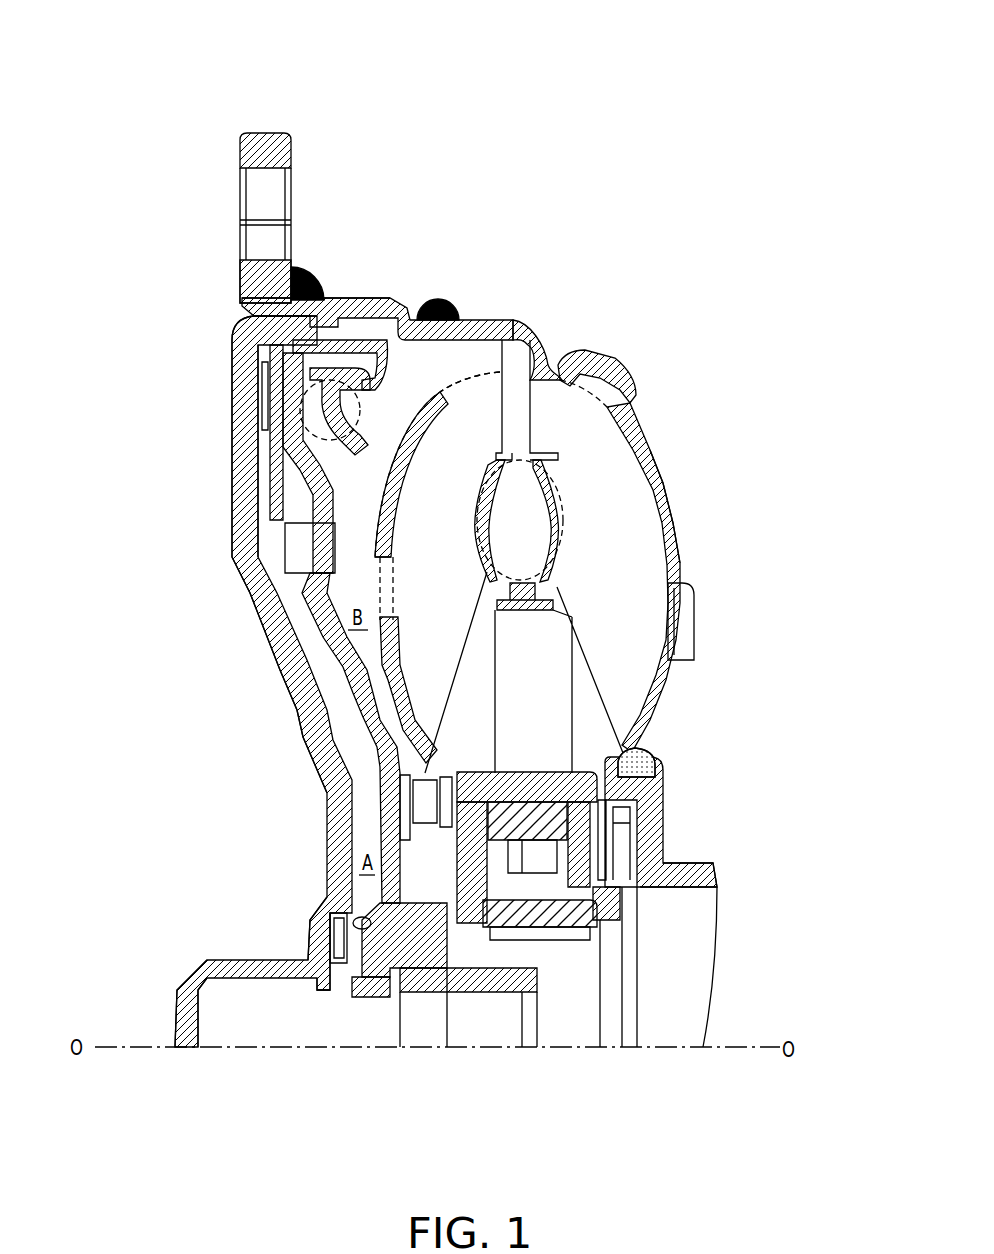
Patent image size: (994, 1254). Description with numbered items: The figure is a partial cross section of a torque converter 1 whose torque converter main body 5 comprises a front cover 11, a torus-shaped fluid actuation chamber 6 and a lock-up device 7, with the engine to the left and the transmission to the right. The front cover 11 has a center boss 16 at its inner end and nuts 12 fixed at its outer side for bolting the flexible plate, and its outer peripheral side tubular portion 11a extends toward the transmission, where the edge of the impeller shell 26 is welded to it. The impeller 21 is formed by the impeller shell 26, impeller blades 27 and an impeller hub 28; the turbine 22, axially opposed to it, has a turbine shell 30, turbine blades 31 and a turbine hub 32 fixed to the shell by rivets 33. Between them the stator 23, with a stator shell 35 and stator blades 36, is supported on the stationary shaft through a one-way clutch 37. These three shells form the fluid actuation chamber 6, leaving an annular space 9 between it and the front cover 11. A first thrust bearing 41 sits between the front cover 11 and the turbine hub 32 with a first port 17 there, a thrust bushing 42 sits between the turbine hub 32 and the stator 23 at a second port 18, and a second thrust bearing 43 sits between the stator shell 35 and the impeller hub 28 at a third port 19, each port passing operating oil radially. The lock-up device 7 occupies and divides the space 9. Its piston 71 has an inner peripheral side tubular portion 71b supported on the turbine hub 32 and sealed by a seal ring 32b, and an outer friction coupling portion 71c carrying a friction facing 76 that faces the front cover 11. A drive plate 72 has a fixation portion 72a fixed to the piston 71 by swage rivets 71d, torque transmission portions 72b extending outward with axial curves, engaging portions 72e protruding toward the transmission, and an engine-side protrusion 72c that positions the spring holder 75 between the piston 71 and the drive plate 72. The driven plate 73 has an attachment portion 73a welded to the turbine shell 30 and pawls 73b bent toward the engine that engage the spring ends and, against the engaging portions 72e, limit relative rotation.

The torque converter 1 is at (548, 78).
The torque converter main body 5 is at (632, 237).
The torus-shaped fluid actuation chamber 6 is at (642, 332).
The lock-up device 7 is at (380, 318).
The annular space 9 is at (302, 702).
The front cover 11 is at (226, 523).
The outer peripheral side tubular portion 11a is at (345, 300).
The nuts 12 is at (278, 130).
The center boss 16 is at (255, 980).
The first port 17 is at (330, 1002).
The second port 18 is at (478, 950).
The third port 19 is at (629, 915).
The impeller 21 is at (670, 468).
The turbine 22 is at (505, 348).
The stator 23 is at (560, 683).
The impeller shell 26 is at (645, 400).
The impeller blades 27 is at (650, 510).
The impeller hub 28 is at (683, 867).
The turbine shell 30 is at (500, 352).
The turbine blades 31 is at (502, 576).
The turbine hub 32 is at (447, 993).
The seal ring 32b is at (355, 921).
The rivets 33 is at (424, 770).
The stator shell 35 is at (655, 765).
The stator blades 36 is at (652, 660).
The one-way clutch 37 is at (453, 818).
The first thrust bearing 41 is at (336, 939).
The thrust bushing 42 is at (455, 995).
The second thrust bearing 43 is at (625, 842).
The piston 71 is at (247, 503).
The inner peripheral side tubular portion 71b is at (393, 902).
The friction coupling portion 71c is at (266, 354).
The swage rivets 71d is at (256, 592).
The drive plate 72 is at (372, 530).
The fixation portion 72a is at (392, 590).
The torque transmission portions 72b is at (398, 466).
The engine-side protrusion 72c is at (252, 480).
The engaging portions 72e is at (382, 475).
The driven plate 73 is at (406, 412).
The attachment portion 73a is at (383, 556).
The pawls 73b is at (322, 296).
The spring holder 75 is at (305, 340).
The friction facing 76 is at (262, 378).